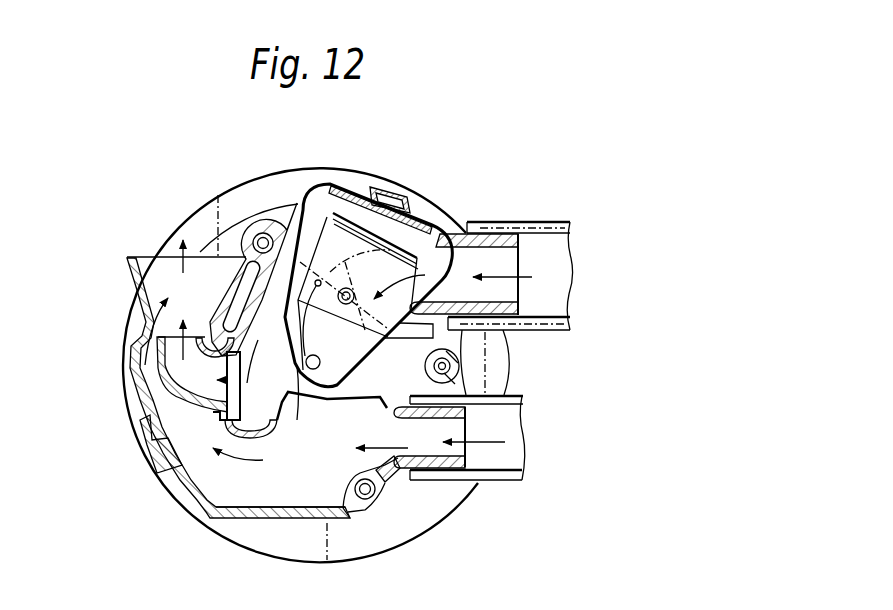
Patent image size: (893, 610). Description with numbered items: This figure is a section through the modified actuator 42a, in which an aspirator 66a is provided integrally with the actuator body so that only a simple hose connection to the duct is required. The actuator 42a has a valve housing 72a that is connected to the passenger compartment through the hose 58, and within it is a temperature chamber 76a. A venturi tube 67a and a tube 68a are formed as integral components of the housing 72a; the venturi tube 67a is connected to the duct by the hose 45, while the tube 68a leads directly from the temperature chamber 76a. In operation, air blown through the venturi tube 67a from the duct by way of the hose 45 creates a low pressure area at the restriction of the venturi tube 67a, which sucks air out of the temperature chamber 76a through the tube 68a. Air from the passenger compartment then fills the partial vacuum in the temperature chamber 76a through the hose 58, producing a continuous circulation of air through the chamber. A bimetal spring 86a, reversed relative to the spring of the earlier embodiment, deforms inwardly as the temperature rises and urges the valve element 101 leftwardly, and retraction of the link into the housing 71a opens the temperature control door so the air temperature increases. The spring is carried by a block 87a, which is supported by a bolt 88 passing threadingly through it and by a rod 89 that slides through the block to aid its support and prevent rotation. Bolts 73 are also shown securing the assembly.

The actuator 42a is at (172, 195).
The hose 45 is at (497, 394).
The hose 58 is at (482, 220).
The aspirator 66a is at (115, 377).
The venturi tube 67a is at (197, 500).
The tube 68a is at (157, 397).
The housing 71a is at (248, 187).
The valve housing 72a is at (285, 230).
The bolt 73 is at (255, 235).
The temperature chamber 76a is at (327, 210).
The bimetal spring 86a is at (415, 217).
The inner plate 87a is at (382, 250).
The bolt 88 is at (345, 305).
The rod 89 is at (312, 370).
The valve element 101 is at (327, 405).